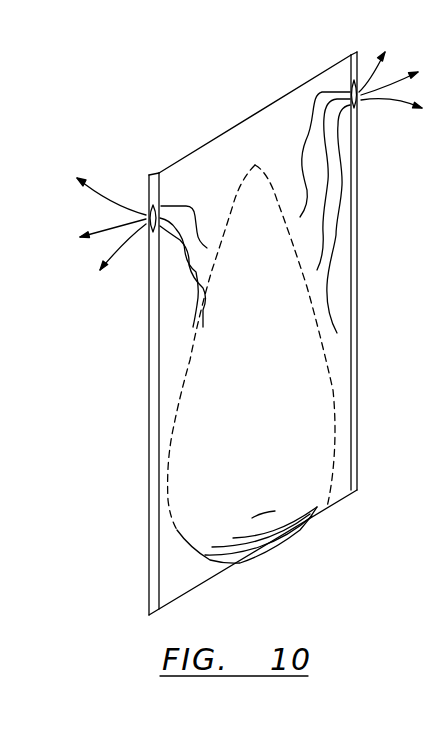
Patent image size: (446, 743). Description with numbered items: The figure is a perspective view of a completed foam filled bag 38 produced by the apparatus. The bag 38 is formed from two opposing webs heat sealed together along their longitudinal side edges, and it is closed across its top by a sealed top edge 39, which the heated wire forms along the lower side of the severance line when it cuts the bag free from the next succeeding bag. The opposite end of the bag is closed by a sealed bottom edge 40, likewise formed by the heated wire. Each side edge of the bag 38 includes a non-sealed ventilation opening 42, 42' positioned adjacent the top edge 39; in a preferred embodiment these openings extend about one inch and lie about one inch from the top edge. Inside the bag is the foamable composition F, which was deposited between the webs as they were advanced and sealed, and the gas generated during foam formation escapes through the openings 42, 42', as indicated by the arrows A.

The formed bag 38 is at (368, 445).
The sealed top edge 39 is at (257, 112).
The sealed bottom edge 40 is at (328, 510).
The non-sealed ventilation opening 42 is at (142, 252).
The non-sealed ventilation opening 42' is at (361, 192).
The foamable composition F is at (303, 487).
The direction indicator A is at (438, 249).